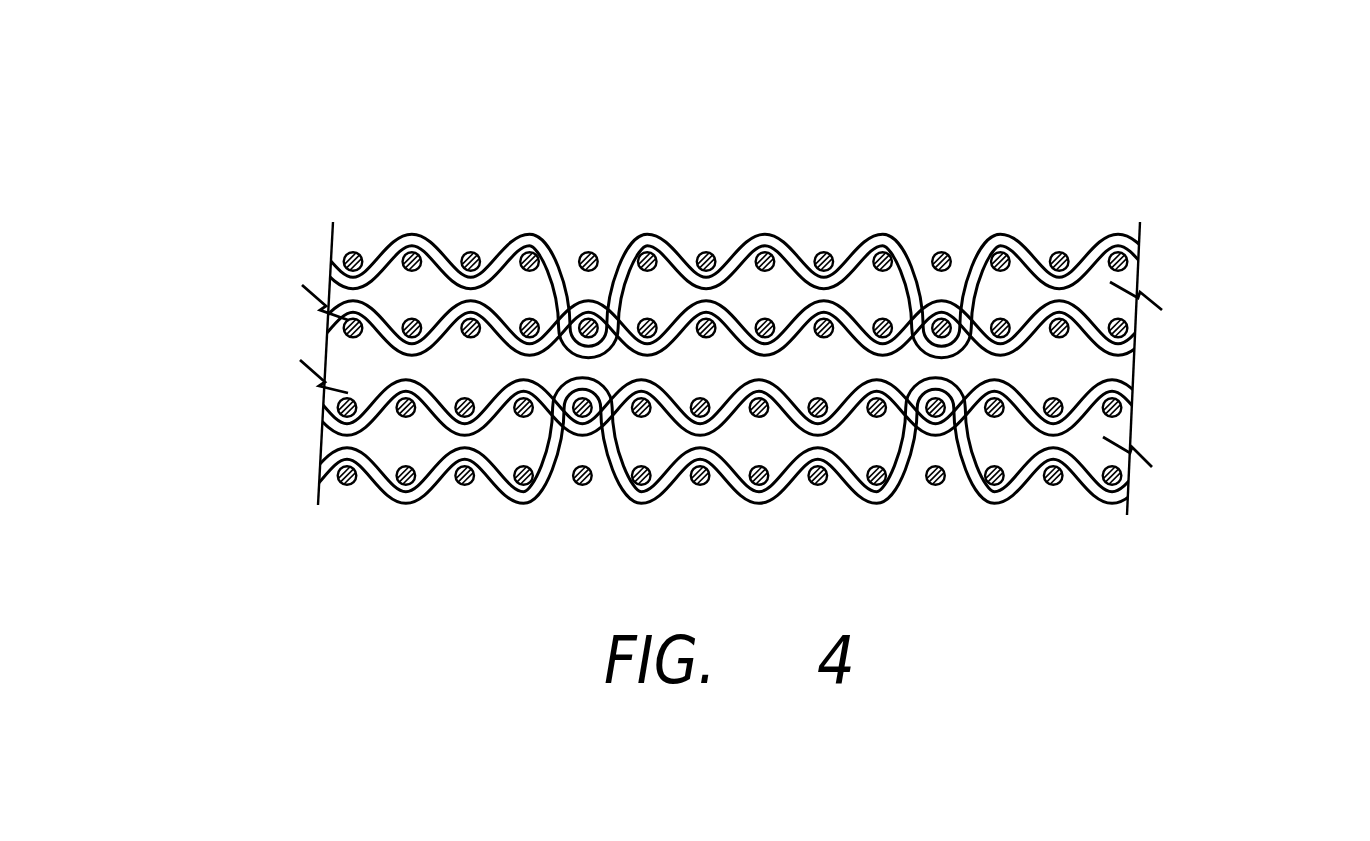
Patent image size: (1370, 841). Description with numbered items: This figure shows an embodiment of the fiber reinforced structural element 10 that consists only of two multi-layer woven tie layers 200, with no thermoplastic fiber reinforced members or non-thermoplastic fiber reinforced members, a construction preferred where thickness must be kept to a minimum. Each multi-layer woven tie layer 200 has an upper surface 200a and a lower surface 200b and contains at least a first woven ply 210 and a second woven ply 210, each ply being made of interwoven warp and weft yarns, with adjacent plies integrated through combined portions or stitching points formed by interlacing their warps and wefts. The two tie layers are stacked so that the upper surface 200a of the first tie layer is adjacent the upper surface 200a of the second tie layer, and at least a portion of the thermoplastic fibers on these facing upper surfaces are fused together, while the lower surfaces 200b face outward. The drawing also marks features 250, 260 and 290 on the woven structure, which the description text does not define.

The fiber reinforced structural element 10 is at (1134, 121).
The multi-layer woven tie layer 200 is at (1260, 230).
The upper surface 200a is at (320, 318).
The lower surface 200b is at (318, 272).
The woven ply 210 is at (1163, 230).
The interlocking section 250 is at (1036, 323).
The corrugation crest 260 is at (765, 237).
The wrap-around connection 290 is at (947, 312).